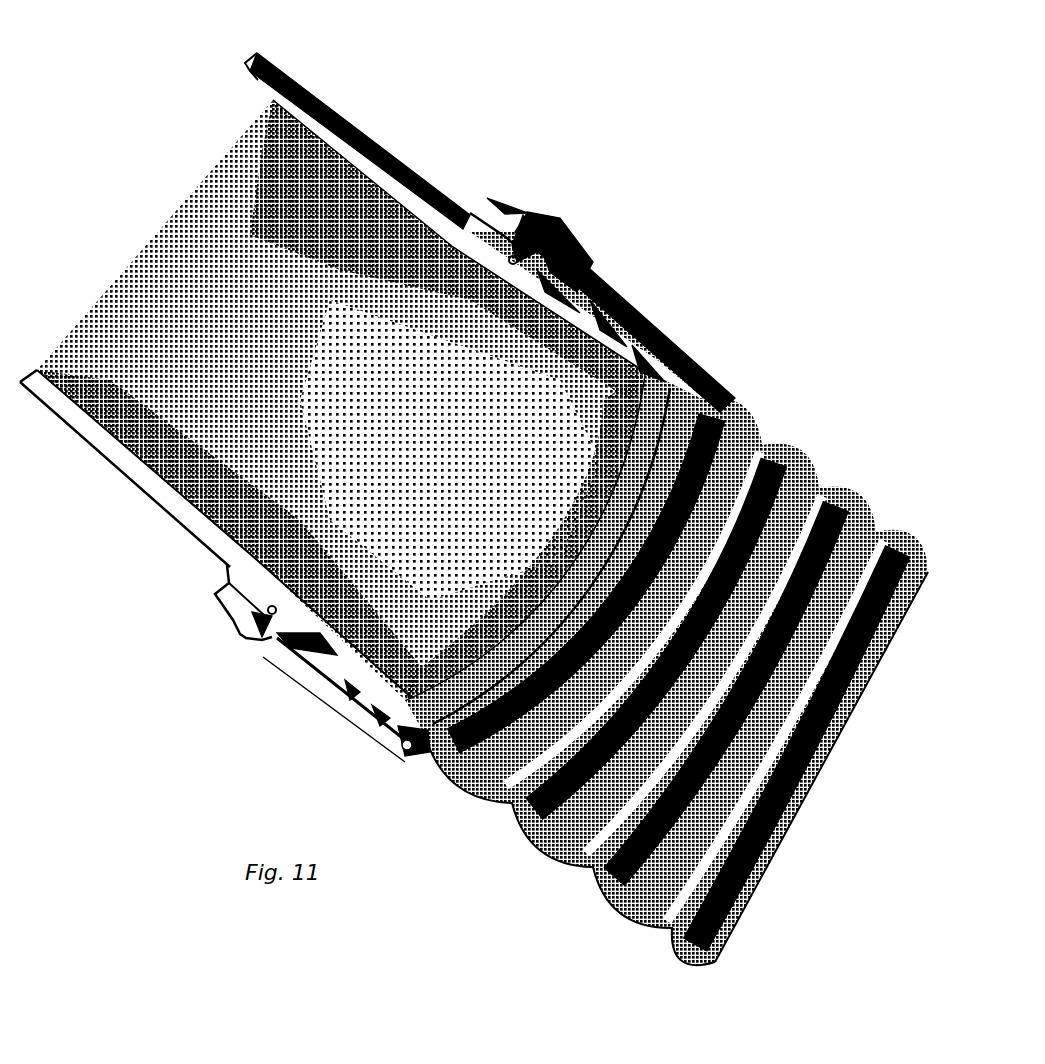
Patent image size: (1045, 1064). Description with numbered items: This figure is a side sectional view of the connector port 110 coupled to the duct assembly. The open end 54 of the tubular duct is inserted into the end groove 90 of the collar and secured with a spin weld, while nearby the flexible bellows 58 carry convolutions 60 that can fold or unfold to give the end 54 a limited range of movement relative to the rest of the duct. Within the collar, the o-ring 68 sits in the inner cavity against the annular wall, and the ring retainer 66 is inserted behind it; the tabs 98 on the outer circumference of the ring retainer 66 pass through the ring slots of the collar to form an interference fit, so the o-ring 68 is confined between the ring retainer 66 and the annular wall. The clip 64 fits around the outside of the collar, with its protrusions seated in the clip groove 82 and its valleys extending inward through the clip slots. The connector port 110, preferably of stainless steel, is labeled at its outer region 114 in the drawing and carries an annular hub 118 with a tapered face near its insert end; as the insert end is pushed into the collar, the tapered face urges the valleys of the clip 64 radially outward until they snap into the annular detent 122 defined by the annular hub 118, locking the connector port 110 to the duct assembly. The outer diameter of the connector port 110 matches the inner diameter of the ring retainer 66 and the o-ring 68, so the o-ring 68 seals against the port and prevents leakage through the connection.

The open end 54 is at (403, 747).
The flexible bellows 58 is at (670, 674).
The convolutions 60 is at (633, 867).
The clip 64 is at (553, 212).
The ring retainer 66 is at (627, 297).
The o-ring 68 is at (653, 322).
The clip groove 82 is at (272, 637).
The end groove 90 is at (403, 745).
The tabs 98 is at (313, 667).
The connector port 110 is at (399, 154).
The flange end 114 is at (248, 70).
The annular hub 118 is at (478, 245).
The annular detent 122 is at (513, 264).